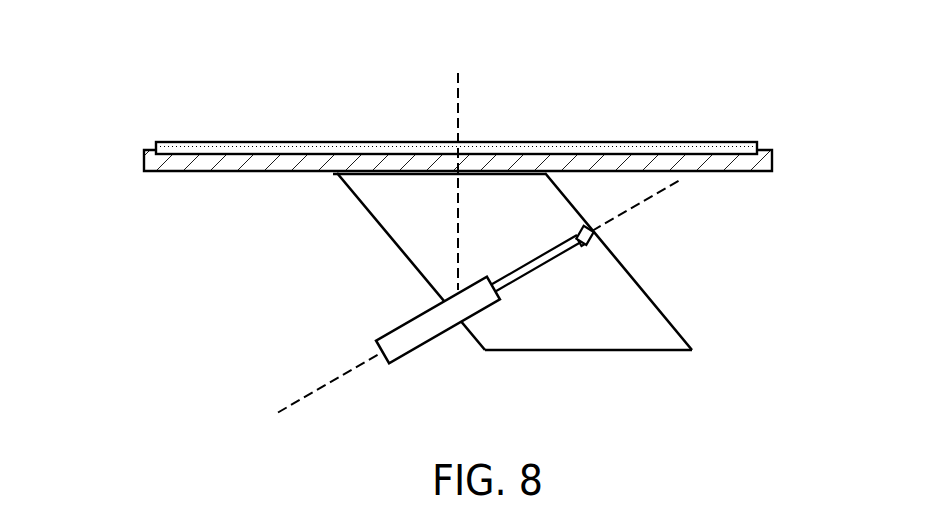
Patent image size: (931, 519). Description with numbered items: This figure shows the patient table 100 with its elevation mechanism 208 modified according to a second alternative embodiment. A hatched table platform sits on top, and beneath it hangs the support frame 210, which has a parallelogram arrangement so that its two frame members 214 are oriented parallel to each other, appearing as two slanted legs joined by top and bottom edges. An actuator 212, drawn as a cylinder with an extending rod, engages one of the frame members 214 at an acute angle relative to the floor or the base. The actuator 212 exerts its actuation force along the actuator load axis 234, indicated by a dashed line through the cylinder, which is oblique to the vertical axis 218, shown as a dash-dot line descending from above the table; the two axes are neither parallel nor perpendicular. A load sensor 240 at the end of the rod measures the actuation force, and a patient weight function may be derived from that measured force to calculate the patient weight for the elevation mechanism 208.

The patient table 100 is at (188, 74).
The elevation mechanism 208 is at (645, 278).
The support frame 210 is at (380, 236).
The actuator 212 is at (448, 333).
The frame members 214 is at (360, 202).
The vertical axis 218 is at (459, 93).
The actuator load axis 234 is at (342, 375).
The load sensor 240 is at (595, 247).